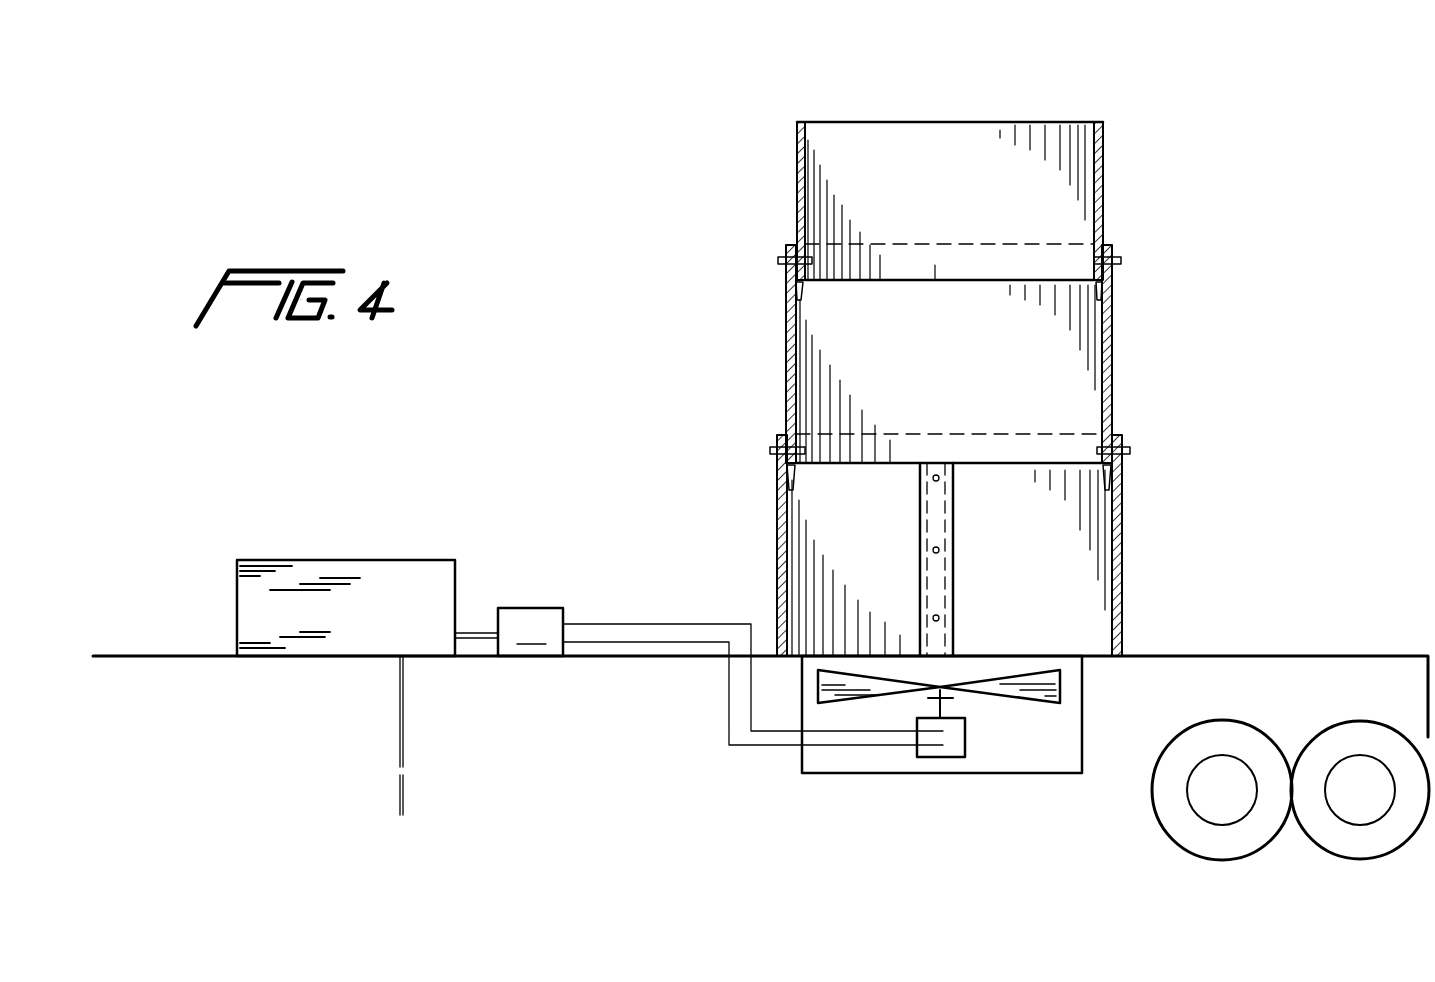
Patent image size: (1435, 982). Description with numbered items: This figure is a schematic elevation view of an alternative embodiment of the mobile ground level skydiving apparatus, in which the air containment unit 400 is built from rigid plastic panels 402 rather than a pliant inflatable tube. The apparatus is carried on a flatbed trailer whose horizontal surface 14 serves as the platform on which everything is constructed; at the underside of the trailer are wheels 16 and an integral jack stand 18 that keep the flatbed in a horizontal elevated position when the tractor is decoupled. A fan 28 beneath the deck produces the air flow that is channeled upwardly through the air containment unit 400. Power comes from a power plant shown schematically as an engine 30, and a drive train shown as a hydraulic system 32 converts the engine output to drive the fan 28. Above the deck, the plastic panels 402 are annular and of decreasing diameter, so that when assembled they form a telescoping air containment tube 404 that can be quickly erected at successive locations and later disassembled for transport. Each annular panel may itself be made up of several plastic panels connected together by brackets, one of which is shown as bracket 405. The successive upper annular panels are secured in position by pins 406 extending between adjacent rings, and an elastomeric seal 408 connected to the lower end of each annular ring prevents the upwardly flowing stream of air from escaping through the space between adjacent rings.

The horizontal surface 14 is at (1243, 655).
The wheels 16 is at (1160, 827).
The integral jack stand 18 is at (403, 790).
The fan 28 is at (858, 690).
The engine 30 is at (392, 562).
The hydraulic system 32 is at (720, 662).
The air containment unit 400 is at (822, 102).
The rigid plastic panels 402 is at (1105, 162).
The air containment tube 404 is at (752, 342).
The bracket 405 is at (955, 520).
The pins 406 is at (782, 260).
The elastomeric seal 408 is at (803, 290).